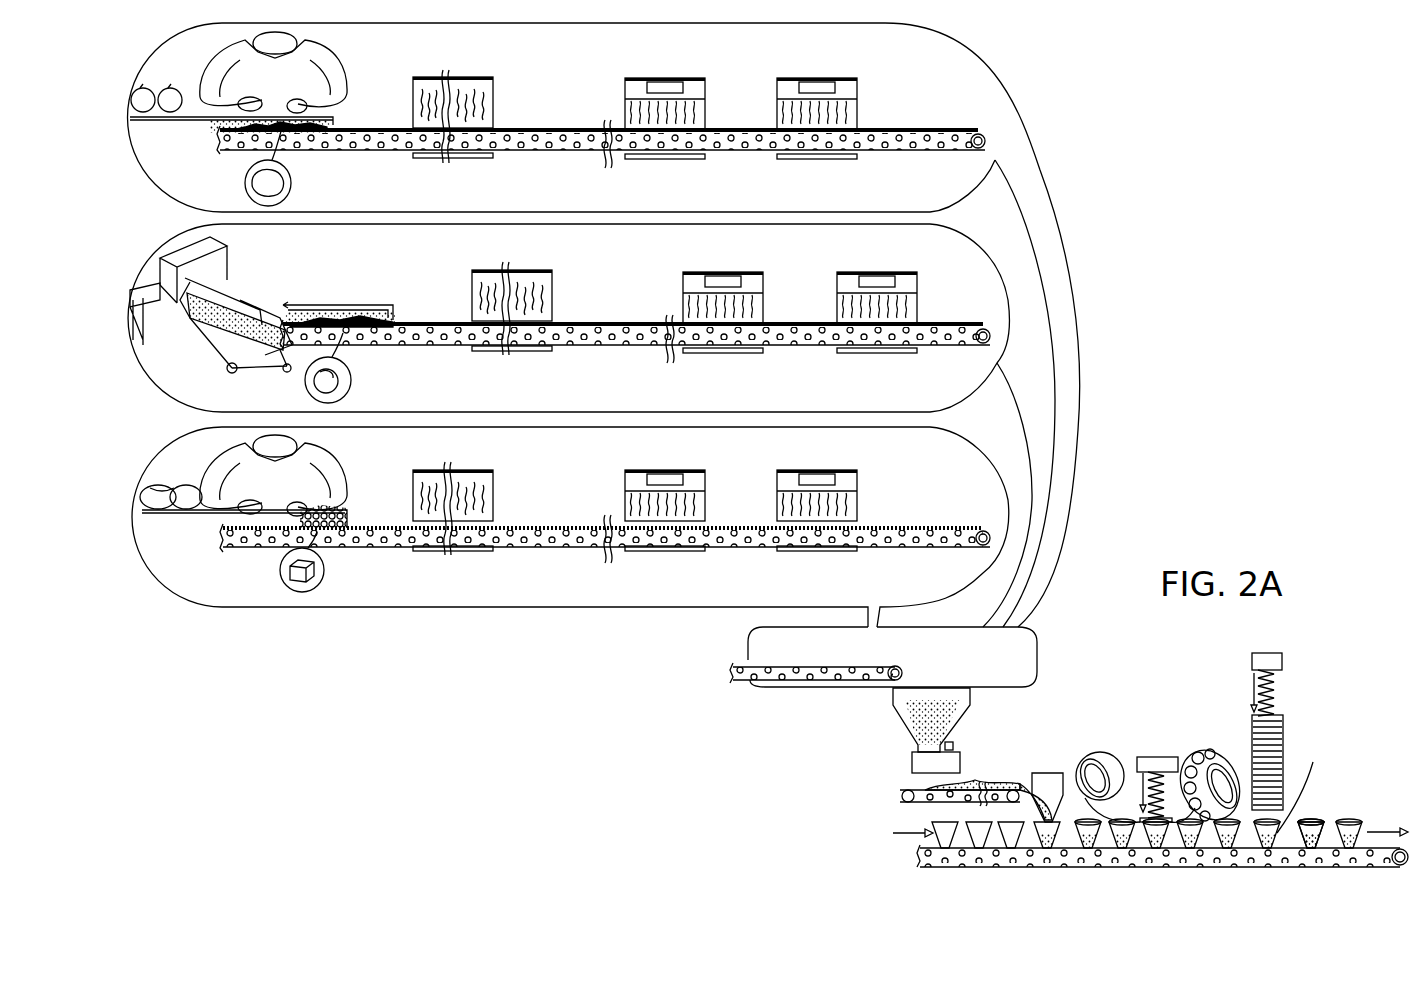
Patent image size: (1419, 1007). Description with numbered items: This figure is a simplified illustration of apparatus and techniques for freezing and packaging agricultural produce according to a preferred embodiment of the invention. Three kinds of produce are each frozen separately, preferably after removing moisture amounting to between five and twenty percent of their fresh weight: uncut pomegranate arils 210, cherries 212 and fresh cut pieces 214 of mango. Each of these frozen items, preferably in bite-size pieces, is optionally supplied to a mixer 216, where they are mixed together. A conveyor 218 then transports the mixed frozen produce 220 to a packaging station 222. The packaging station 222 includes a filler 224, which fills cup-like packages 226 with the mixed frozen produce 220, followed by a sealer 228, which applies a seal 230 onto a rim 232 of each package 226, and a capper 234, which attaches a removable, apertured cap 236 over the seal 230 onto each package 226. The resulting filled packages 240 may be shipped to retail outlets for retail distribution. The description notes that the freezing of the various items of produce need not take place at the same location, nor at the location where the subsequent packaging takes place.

The uncut pomegranate arils 210 is at (291, 183).
The cherries 212 is at (351, 380).
The fresh cut pieces of mango 214 is at (324, 570).
The mixer 216 is at (907, 713).
The conveyor 218 is at (927, 783).
The mixed frozen produce 220 is at (997, 777).
The packaging station 222 is at (1345, 718).
The filler 224 is at (1048, 773).
The cup-like packages 226 is at (983, 840).
The sealer 228 is at (1142, 757).
The seal 230 is at (1190, 752).
The rim 232 is at (933, 817).
The capper 234 is at (1280, 663).
The removable, apertured cap 236 is at (1313, 817).
The filled packages 240 is at (1305, 786).